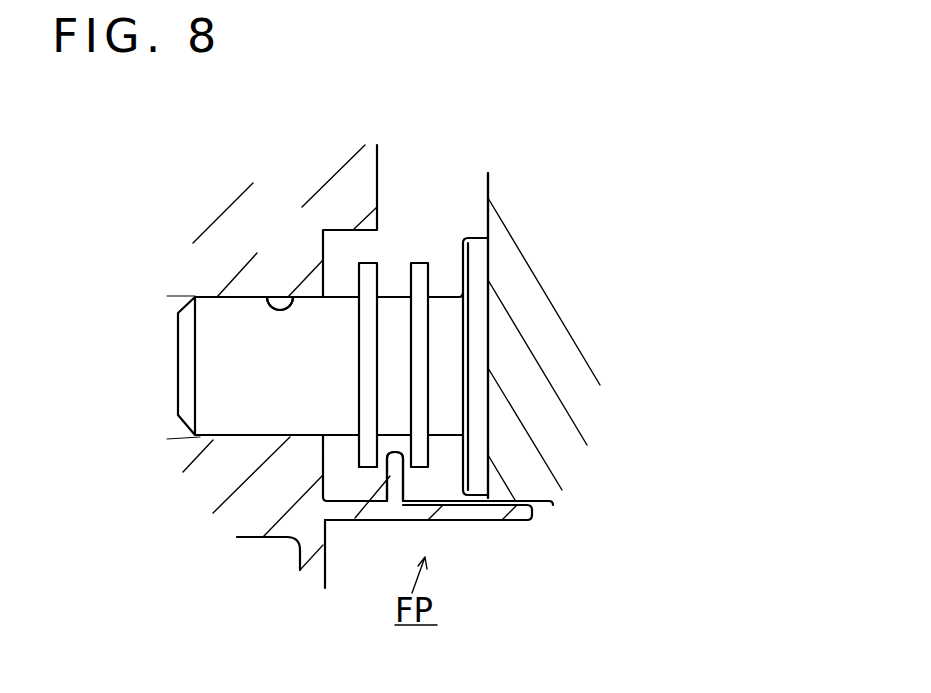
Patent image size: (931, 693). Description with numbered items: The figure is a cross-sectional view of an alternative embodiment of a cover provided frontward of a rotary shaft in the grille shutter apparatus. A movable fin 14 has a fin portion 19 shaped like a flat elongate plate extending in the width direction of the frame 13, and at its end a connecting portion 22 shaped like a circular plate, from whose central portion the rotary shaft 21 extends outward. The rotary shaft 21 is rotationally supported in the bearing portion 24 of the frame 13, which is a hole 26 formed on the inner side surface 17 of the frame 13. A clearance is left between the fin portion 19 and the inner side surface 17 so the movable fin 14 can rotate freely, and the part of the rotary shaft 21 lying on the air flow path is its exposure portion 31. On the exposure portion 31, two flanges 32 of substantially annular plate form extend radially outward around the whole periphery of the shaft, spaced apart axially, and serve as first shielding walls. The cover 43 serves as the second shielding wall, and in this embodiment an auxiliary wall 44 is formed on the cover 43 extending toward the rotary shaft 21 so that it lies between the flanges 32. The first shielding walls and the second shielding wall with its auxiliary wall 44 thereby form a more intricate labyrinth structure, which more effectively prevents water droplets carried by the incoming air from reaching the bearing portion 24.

The rotary shaft 21 is at (178, 357).
The bearing portion 24 is at (290, 297).
The hole 26 is at (284, 271).
The flanges 32 is at (427, 263).
The exposure portion 31 is at (447, 428).
The connecting portion 22 is at (478, 270).
The movable fin 14 is at (489, 188).
The fin portion 19 is at (477, 309).
The auxiliary wall 44 is at (392, 474).
The cover 43 is at (473, 512).
The inner side surface 17 is at (327, 560).
The frame 13 is at (250, 540).